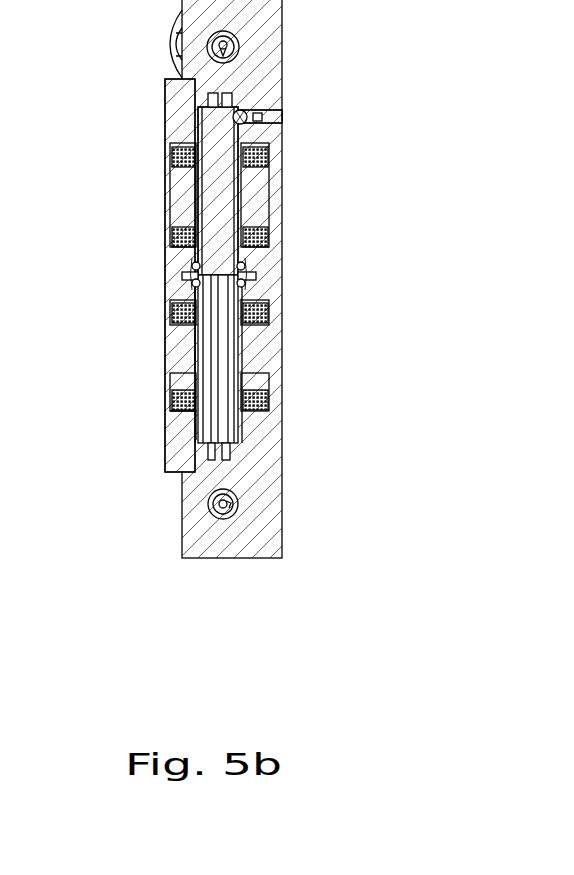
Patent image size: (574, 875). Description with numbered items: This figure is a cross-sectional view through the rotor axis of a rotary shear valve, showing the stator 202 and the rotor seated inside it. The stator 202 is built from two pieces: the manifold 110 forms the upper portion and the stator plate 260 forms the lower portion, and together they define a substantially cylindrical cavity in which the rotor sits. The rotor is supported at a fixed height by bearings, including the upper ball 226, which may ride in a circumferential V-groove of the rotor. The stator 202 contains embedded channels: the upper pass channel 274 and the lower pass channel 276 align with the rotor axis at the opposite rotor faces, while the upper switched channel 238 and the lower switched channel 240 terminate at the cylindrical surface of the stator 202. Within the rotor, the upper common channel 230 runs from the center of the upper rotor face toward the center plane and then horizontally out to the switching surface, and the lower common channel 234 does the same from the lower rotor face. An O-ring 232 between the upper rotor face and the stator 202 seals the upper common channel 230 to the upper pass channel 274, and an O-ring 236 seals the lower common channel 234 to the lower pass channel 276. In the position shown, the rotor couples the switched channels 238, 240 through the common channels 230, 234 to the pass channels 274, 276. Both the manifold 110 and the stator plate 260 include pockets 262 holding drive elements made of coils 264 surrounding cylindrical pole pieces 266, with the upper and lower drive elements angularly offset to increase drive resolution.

The manifold 110 is at (257, 545).
The stator 202 is at (160, 491).
The upper ball 226 is at (246, 112).
The upper common channel 230 is at (222, 357).
The O-ring 232 is at (247, 285).
The lower common channel 234 is at (210, 380).
The O-ring 236 is at (193, 265).
The upper switched channel 238 is at (229, 455).
The lower switched channel 240 is at (211, 460).
The stator plate 260 is at (185, 113).
The pocket 262 is at (178, 427).
The coil 264 is at (173, 405).
The cylindrical pole piece 266 is at (183, 357).
The upper pass channel 274 is at (244, 266).
The lower pass channel 276 is at (182, 276).